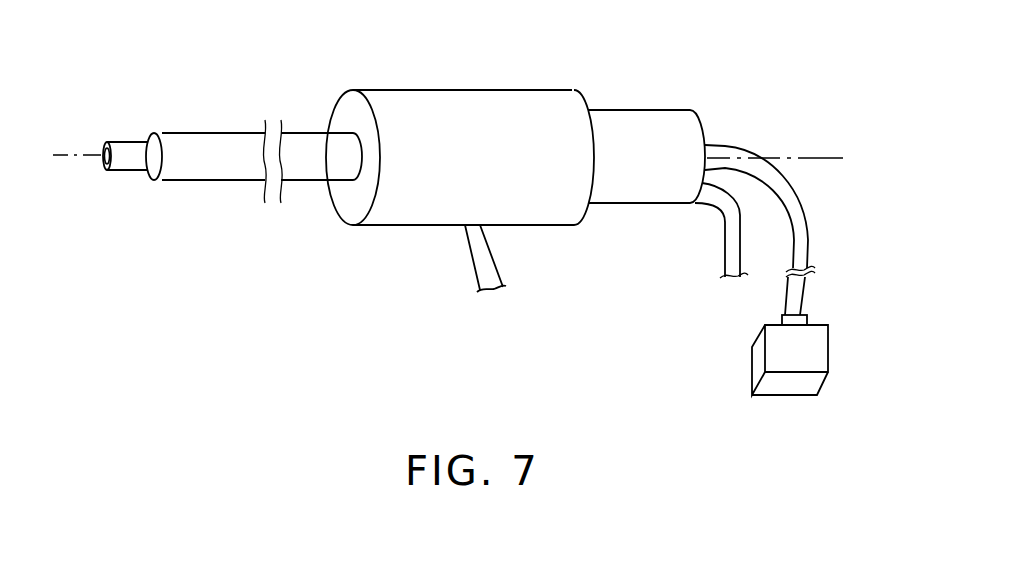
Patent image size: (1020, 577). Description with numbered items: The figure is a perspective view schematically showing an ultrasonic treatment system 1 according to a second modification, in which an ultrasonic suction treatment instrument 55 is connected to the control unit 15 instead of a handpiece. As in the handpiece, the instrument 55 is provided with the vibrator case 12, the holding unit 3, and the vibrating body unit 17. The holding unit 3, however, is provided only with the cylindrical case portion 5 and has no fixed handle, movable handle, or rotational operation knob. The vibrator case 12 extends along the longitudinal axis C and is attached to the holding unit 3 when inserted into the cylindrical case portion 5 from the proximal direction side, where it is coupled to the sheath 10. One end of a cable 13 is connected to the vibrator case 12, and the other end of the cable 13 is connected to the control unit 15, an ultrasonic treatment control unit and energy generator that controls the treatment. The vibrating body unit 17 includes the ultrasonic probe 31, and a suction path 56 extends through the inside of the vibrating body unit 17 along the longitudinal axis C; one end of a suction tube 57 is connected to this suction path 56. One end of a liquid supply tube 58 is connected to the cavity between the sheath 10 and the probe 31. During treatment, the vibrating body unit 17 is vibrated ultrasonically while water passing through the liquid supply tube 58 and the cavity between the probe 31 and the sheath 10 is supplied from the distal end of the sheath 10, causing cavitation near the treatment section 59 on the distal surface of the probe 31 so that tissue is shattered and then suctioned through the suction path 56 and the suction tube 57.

The ultrasonic treatment system 1 is at (684, 31).
The holding unit 3 is at (423, 118).
The cylindrical case portion 5 is at (398, 218).
The sheath 10 is at (207, 142).
The vibrator case 12 is at (660, 122).
The cable 13 is at (798, 203).
The control unit 15 is at (790, 388).
The vibrating body unit 17 is at (139, 165).
The ultrasonic probe 31 is at (128, 147).
The ultrasonic suction treatment instrument 55 is at (551, 84).
The suction path 56 is at (103, 147).
The suction tube 57 is at (730, 222).
The liquid supply tube 58 is at (490, 267).
The treatment section 59 is at (103, 171).
The longitudinal axis C is at (833, 157).